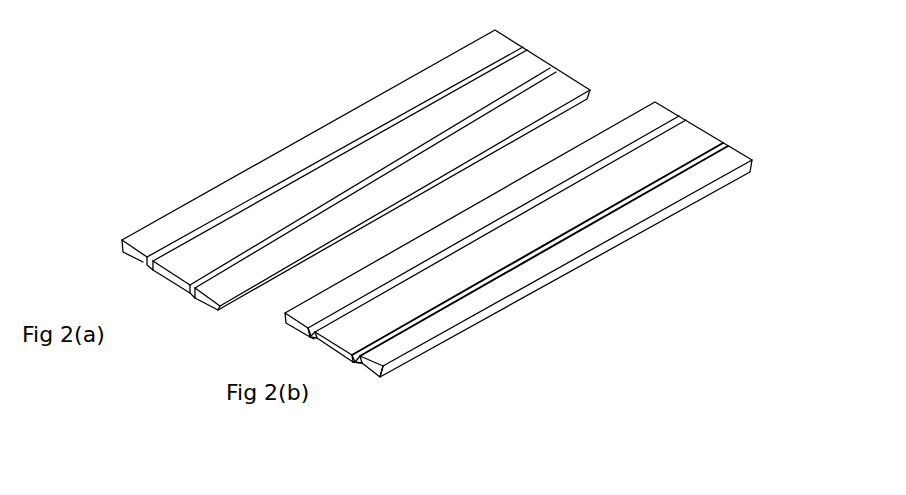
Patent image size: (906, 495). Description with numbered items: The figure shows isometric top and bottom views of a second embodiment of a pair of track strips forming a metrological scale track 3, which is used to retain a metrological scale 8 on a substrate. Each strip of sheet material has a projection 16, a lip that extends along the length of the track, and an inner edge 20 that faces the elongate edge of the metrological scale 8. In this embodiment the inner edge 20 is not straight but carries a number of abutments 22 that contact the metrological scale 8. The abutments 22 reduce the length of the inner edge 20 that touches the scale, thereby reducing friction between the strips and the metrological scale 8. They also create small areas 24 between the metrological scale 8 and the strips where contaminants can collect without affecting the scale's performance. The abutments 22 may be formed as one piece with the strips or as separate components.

In FIG. 2A, the metrological scale track 3 is at (176, 157).
In FIG. 2A, the metrological scale 8 is at (537, 65).
In FIG. 2B, the metrological scale 8 is at (700, 132).
In FIG. 2A, the projection 16 is at (150, 270).
In FIG. 2B, the projection 16 is at (313, 343).
In FIG. 2B, the inner edge 20 is at (307, 338).
In FIG. 2B, the abutments 22 is at (482, 257).
In FIG. 2B, the small areas 24 is at (327, 310).